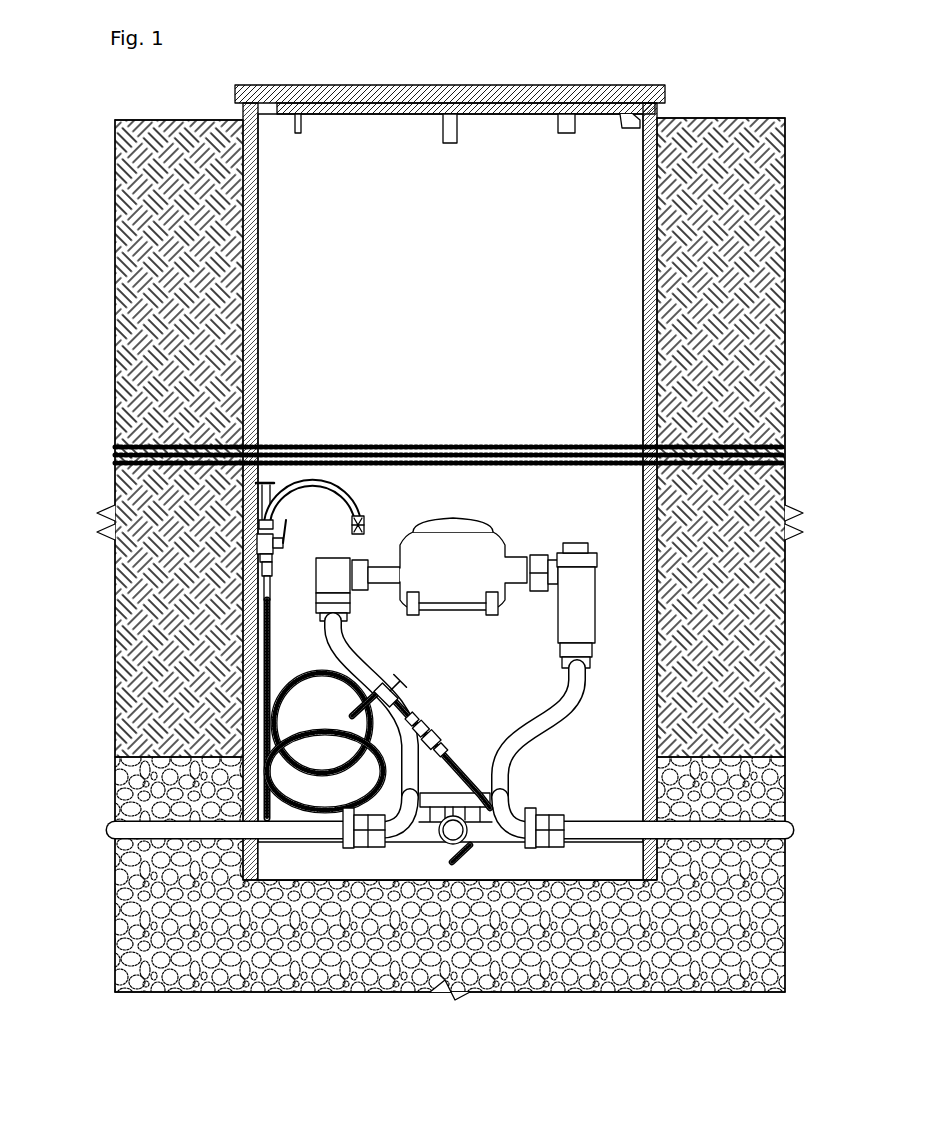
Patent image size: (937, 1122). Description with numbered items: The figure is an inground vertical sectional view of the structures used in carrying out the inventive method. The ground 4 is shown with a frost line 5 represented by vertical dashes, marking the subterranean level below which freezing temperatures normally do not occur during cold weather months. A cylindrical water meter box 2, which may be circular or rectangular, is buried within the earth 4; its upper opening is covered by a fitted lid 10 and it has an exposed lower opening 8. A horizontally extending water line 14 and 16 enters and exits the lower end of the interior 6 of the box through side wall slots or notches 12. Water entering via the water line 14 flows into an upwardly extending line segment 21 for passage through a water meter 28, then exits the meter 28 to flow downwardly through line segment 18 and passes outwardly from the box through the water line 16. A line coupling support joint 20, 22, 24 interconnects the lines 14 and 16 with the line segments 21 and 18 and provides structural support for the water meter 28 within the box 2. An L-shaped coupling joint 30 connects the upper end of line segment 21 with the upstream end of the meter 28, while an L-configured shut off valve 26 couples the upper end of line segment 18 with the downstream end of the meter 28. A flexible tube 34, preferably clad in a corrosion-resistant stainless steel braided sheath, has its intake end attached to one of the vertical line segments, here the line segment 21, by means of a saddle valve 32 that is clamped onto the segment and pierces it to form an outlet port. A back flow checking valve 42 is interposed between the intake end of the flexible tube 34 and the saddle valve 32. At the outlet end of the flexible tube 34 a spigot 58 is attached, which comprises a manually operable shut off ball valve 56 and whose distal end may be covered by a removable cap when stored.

The water meter box 2 is at (245, 325).
The ground 4 is at (170, 375).
The frost line 5 is at (430, 452).
The interior 6 is at (473, 331).
The lower opening 8 is at (447, 883).
The lid 10 is at (535, 93).
The side wall slots or notches 12 is at (245, 862).
The water line 14 is at (190, 830).
The water line 16 is at (597, 838).
The line segment 18 is at (565, 708).
The line coupling support joint 20 is at (530, 845).
The line segment 21 is at (350, 666).
The line coupling support joint 22 is at (360, 845).
The line coupling support joint 24 is at (478, 842).
The shut off valve 26 is at (585, 596).
The water meter 28 is at (462, 603).
The L coupling joint 30 is at (322, 578).
The saddle valve 32 is at (390, 688).
The flexible tube 34 is at (292, 777).
The back flow checking valve 42 is at (438, 725).
The shut off ball valve 56 is at (262, 557).
The spigot 58 is at (265, 487).